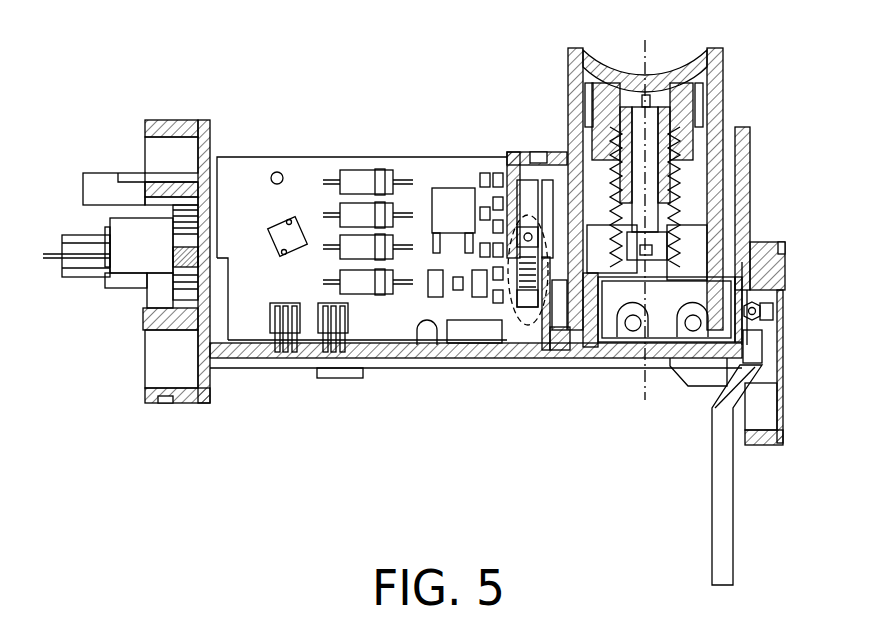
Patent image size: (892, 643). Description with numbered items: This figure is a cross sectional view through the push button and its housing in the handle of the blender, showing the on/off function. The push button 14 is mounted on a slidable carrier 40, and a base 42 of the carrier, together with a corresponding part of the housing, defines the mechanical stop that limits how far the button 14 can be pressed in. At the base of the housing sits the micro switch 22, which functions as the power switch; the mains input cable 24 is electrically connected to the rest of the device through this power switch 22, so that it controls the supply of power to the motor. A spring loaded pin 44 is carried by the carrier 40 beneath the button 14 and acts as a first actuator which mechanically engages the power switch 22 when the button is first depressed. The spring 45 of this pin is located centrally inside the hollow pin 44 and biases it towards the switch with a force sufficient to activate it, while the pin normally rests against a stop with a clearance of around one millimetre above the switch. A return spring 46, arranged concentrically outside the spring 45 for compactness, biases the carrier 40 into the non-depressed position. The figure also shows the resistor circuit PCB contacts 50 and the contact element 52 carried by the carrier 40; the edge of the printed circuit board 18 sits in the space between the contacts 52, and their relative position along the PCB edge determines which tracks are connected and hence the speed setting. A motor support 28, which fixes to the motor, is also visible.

The push button 14 is at (680, 67).
The printed circuit board 18 is at (303, 157).
The micro switch 22 is at (660, 318).
The mains input cable 24 is at (730, 548).
The motor support 28 is at (172, 395).
The slidable carrier 40 is at (690, 110).
The base of the carrier 42 is at (582, 277).
The spring loaded pin 44 is at (650, 212).
The spring 45 is at (643, 95).
The return spring 46 is at (670, 238).
The resistor circuit PCB contacts 50 is at (524, 320).
The contact element 52 is at (527, 195).